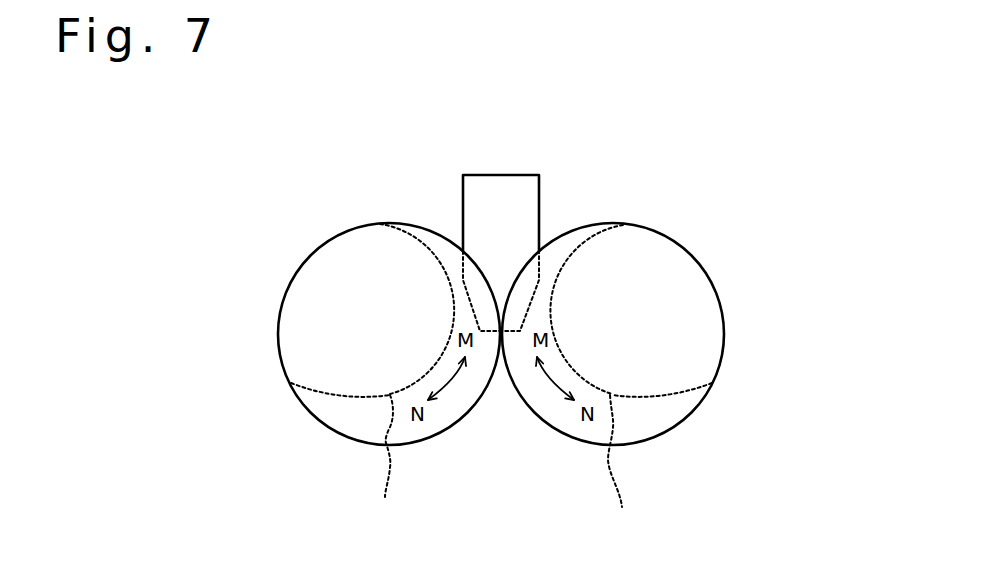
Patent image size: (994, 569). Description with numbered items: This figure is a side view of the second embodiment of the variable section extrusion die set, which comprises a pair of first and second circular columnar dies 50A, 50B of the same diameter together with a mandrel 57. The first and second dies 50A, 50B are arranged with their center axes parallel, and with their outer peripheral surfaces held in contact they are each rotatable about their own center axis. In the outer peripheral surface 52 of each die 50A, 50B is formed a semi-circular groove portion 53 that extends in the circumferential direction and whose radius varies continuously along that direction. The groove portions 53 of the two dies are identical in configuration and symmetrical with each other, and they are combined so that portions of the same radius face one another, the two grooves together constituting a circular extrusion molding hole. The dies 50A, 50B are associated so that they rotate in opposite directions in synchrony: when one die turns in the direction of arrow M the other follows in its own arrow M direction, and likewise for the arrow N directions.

The first circular columnar die 50A is at (658, 438).
The second circular columnar die 50B is at (330, 427).
The outer peripheral surface 52 is at (298, 402).
The semi-circular groove portion 53 is at (506, 470).
The mandrel 57 is at (540, 198).